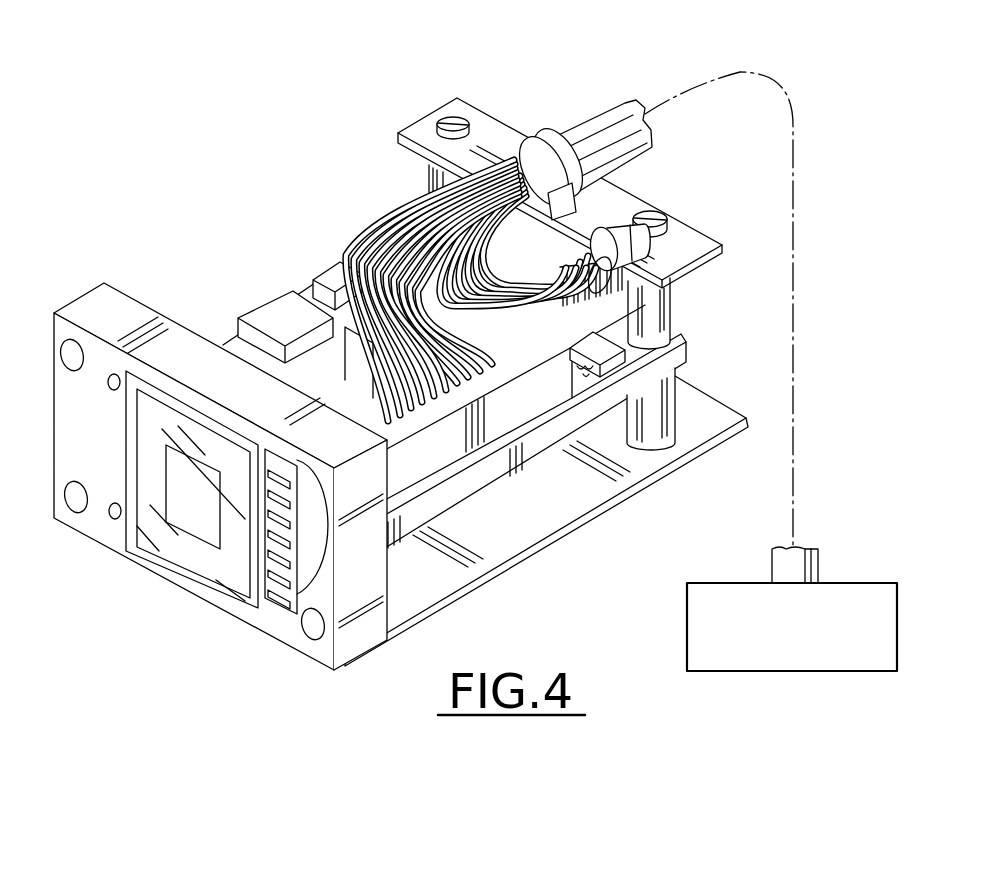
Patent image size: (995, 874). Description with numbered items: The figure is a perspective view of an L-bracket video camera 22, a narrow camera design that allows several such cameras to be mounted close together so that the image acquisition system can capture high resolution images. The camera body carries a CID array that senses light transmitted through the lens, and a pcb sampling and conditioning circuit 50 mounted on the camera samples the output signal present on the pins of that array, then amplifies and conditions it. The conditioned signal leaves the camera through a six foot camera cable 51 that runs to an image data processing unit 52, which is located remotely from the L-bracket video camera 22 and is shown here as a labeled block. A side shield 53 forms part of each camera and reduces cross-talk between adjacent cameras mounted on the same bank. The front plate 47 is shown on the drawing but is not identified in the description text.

The camera assembly 22 is at (310, 166).
The front mounting plate 47 is at (135, 295).
The standoff bracket 50 is at (686, 340).
The camera cable 51 is at (592, 120).
The camera data processing unit 52 is at (832, 582).
The base circuit board 53 is at (618, 502).